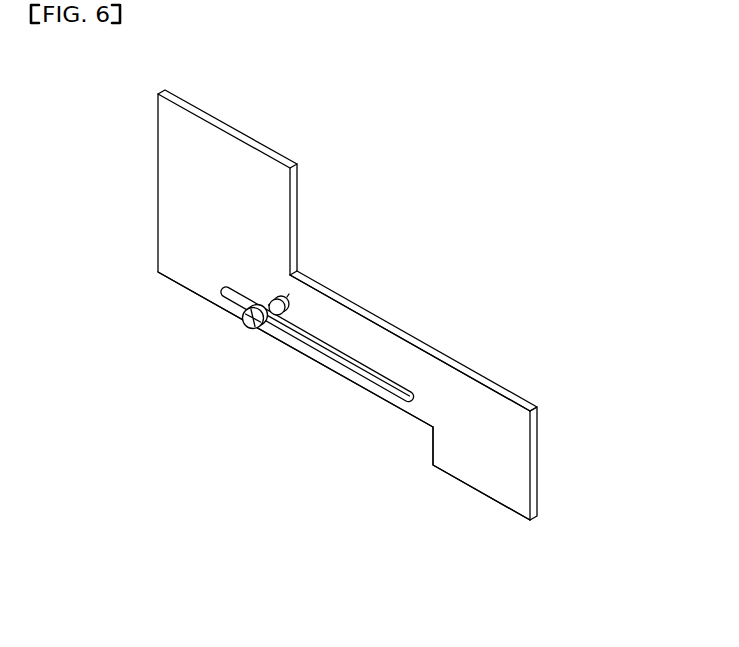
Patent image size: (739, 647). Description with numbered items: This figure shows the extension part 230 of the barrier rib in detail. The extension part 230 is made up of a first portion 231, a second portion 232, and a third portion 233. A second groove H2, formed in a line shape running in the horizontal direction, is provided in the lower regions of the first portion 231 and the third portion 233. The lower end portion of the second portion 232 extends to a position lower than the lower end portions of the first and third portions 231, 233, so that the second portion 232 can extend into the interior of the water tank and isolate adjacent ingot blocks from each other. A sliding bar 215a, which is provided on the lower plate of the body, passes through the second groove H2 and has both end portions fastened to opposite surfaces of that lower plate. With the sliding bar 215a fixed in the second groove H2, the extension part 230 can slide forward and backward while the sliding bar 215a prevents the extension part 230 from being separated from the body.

The extension part 230 is at (351, 305).
The first portion 231 is at (177, 188).
The second portion 232 is at (516, 463).
The third portion 233 is at (355, 330).
The sliding bar 215a is at (251, 329).
The second groove H2 is at (357, 367).